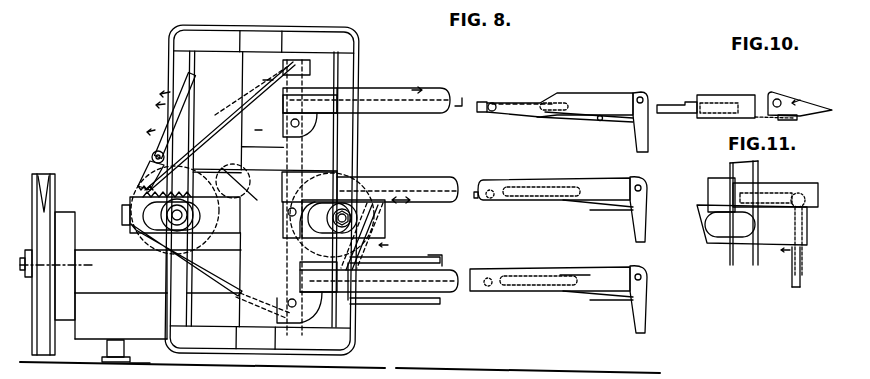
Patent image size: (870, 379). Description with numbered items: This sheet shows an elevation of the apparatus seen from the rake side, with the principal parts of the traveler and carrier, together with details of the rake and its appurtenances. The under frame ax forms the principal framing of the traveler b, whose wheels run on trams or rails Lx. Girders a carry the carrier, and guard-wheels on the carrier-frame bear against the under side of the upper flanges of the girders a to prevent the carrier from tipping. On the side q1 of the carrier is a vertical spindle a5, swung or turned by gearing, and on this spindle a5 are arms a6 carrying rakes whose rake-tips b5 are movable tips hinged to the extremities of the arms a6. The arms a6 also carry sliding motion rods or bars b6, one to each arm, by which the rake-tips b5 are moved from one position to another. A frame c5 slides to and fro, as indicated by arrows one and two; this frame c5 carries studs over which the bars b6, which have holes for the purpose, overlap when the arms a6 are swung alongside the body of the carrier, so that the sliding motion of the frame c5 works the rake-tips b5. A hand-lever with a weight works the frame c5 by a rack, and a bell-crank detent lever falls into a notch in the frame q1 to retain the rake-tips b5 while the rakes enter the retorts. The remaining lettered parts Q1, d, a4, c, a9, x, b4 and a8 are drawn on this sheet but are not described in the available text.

In FIG. 8, the side of the carrier q1 is at (262, 190).
In FIG. 11, the side of the carrier q1 is at (744, 213).
In FIG. 8, the frame upright Q1 is at (341, 189).
In FIG. 8, the pulley and bearing d is at (57, 264).
In FIG. 8, the girders a is at (158, 271).
In FIG. 8, the under frame ax is at (121, 316).
In FIG. 8, the traveler b is at (116, 351).
In FIG. 8, the trams or rails Lx is at (140, 358).
In FIG. 8, the sliding frame c5 is at (216, 197).
In FIG. 11, the sliding frame c5 is at (752, 225).
In FIG. 8, the lever arm a4 is at (167, 132).
In FIG. 8, the connecting rod c is at (213, 190).
In FIG. 11, the connecting rod c is at (795, 247).
In FIG. 8, the arms a6 is at (233, 179).
In FIG. 8, the vertical spindle a5 is at (257, 108).
In FIG. 8, the sliding motion rods or bars b6 is at (376, 96).
In FIG. 10, the sliding motion rods or bars b6 is at (673, 115).
In FIG. 8, the block a9 is at (309, 189).
In FIG. 10, the block a9 is at (745, 101).
In FIG. 11, the block a9 is at (763, 195).
In FIG. 8, the rake-tips b5 is at (299, 218).
In FIG. 10, the rake-tips b5 is at (800, 111).
In FIG. 8, the lower pulley assembly x is at (374, 247).
In FIG. 8, the detached arm b4 is at (563, 212).
In FIG. 8, the arm a8 is at (582, 278).